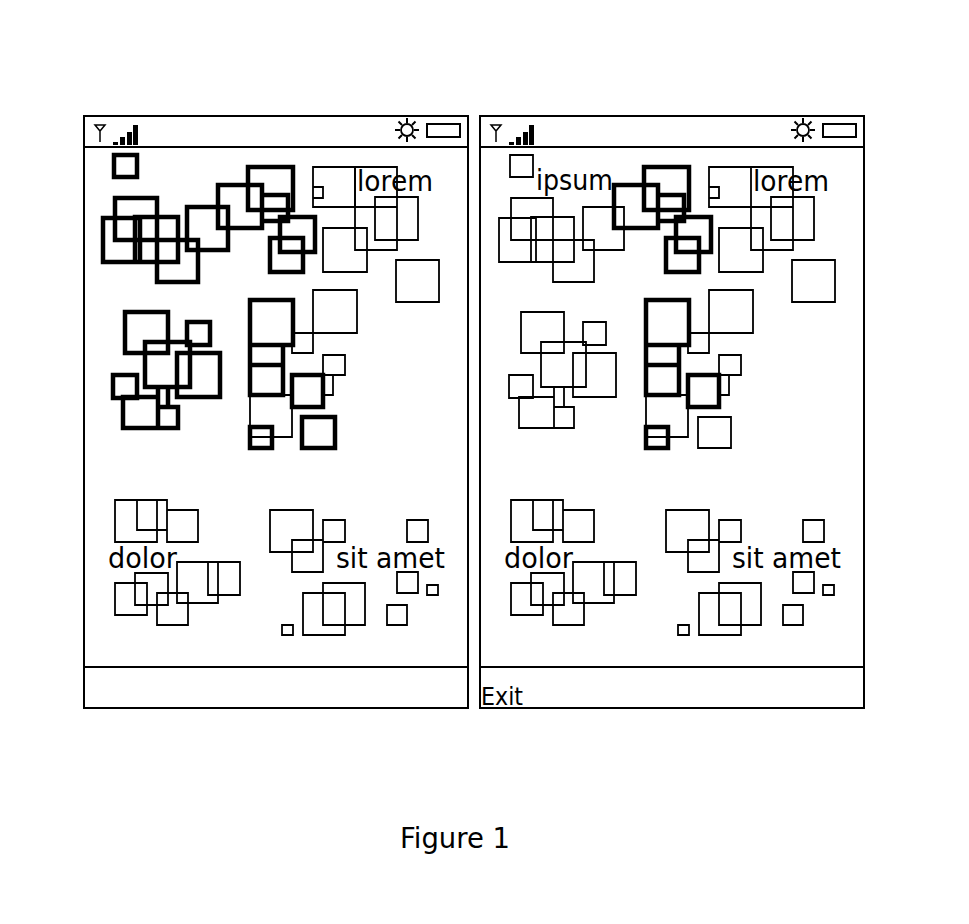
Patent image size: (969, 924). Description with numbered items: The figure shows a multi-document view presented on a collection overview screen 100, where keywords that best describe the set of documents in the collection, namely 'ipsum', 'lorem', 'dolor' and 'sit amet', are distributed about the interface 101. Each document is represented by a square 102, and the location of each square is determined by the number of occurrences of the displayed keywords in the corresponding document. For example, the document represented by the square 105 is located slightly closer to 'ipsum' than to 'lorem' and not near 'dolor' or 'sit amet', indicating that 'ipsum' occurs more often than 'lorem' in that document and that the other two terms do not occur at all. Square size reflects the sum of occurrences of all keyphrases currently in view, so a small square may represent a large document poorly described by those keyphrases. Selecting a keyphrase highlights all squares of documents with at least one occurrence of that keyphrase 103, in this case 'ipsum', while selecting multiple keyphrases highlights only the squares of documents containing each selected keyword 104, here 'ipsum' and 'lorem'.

The collection overview screen 100 is at (242, 635).
The interface 101 is at (167, 168).
The square 102 is at (270, 212).
The highlighted squares of documents containing a selected keyphrase 103 is at (125, 337).
The highlighted squares of documents containing each selected keyphrase 104 is at (667, 177).
The square representing a document 105 is at (344, 177).